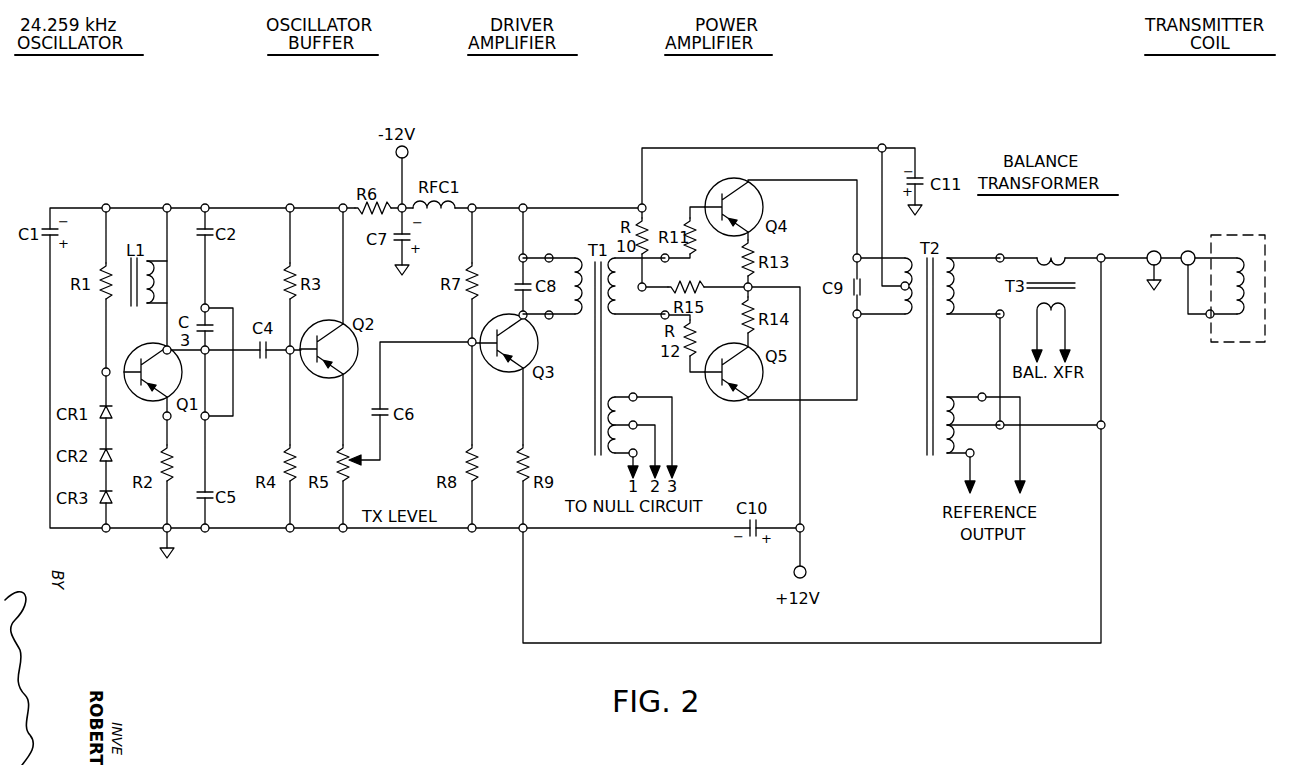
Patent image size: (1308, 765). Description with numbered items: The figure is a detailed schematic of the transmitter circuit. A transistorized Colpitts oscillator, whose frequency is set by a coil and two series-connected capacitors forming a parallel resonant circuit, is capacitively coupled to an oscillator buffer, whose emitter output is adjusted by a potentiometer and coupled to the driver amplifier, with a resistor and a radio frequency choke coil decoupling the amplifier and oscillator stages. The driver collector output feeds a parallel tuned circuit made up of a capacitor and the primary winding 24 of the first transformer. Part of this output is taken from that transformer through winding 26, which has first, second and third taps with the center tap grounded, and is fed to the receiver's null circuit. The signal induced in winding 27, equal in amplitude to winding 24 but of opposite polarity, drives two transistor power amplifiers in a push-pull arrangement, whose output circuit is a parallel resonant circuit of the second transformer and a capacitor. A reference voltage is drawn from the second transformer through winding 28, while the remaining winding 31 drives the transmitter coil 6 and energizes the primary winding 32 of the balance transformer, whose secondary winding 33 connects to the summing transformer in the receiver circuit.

The transmitter coil 6 is at (1248, 292).
The primary winding of transformer T1 24 is at (576, 318).
The winding of transformer T1 26 is at (628, 394).
The winding of transformer T1 27 is at (617, 318).
The winding of transformer T2 28 is at (950, 394).
The winding of transformer T2 31 is at (949, 318).
The primary winding of balance transformer T3 32 is at (1044, 268).
The secondary winding of balance transformer T3 33 is at (1070, 313).